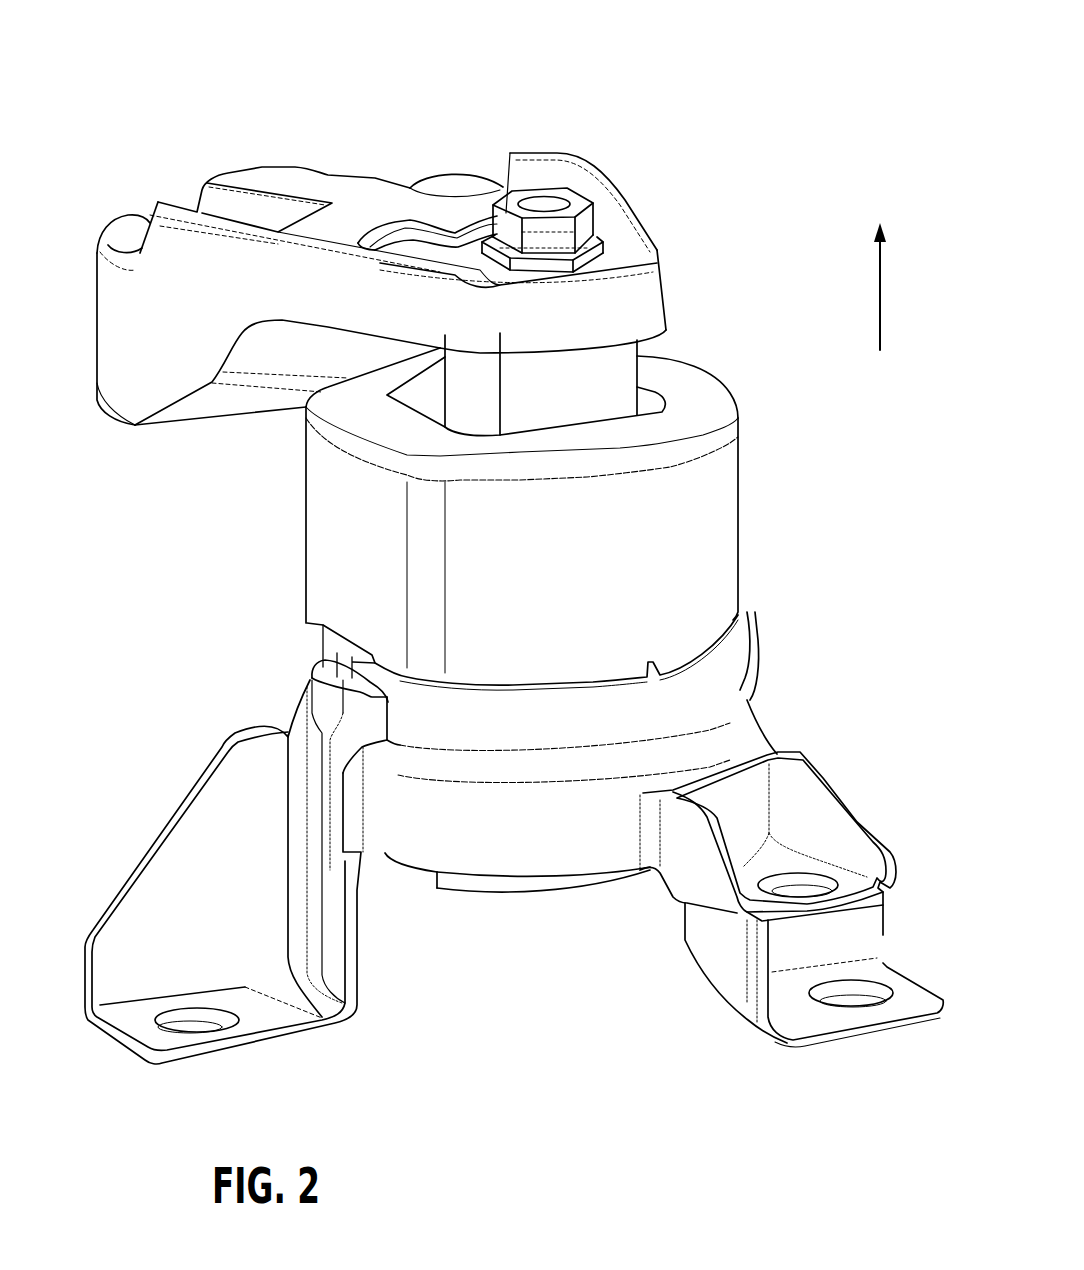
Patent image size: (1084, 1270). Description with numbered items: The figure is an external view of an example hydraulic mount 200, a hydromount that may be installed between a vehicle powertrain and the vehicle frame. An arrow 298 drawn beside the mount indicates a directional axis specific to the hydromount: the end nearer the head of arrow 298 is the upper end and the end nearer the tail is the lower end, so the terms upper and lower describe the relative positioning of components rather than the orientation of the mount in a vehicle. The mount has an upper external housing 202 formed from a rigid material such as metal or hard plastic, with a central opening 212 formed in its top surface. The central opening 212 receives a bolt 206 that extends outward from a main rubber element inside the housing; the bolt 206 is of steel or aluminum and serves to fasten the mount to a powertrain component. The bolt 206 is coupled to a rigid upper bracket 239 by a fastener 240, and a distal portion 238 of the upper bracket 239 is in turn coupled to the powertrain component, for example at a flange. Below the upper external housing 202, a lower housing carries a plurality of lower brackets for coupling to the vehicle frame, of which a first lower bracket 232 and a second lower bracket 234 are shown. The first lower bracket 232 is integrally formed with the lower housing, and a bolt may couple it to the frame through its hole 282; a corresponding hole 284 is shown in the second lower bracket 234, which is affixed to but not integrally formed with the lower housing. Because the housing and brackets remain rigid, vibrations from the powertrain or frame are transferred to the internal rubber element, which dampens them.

The hydraulic mount 200 is at (815, 58).
The upper external housing 202 is at (725, 493).
The bolt 206 is at (625, 373).
The central opening 212 is at (648, 400).
The first lower bracket 232 is at (835, 823).
The second lower bracket 234 is at (192, 823).
The distal portion 238 is at (133, 240).
The upper bracket 239 is at (607, 192).
The fastener 240 is at (503, 190).
The hole 282 is at (867, 990).
The mounting hole of left bracket 284 is at (152, 1012).
The arrow 298 is at (880, 313).